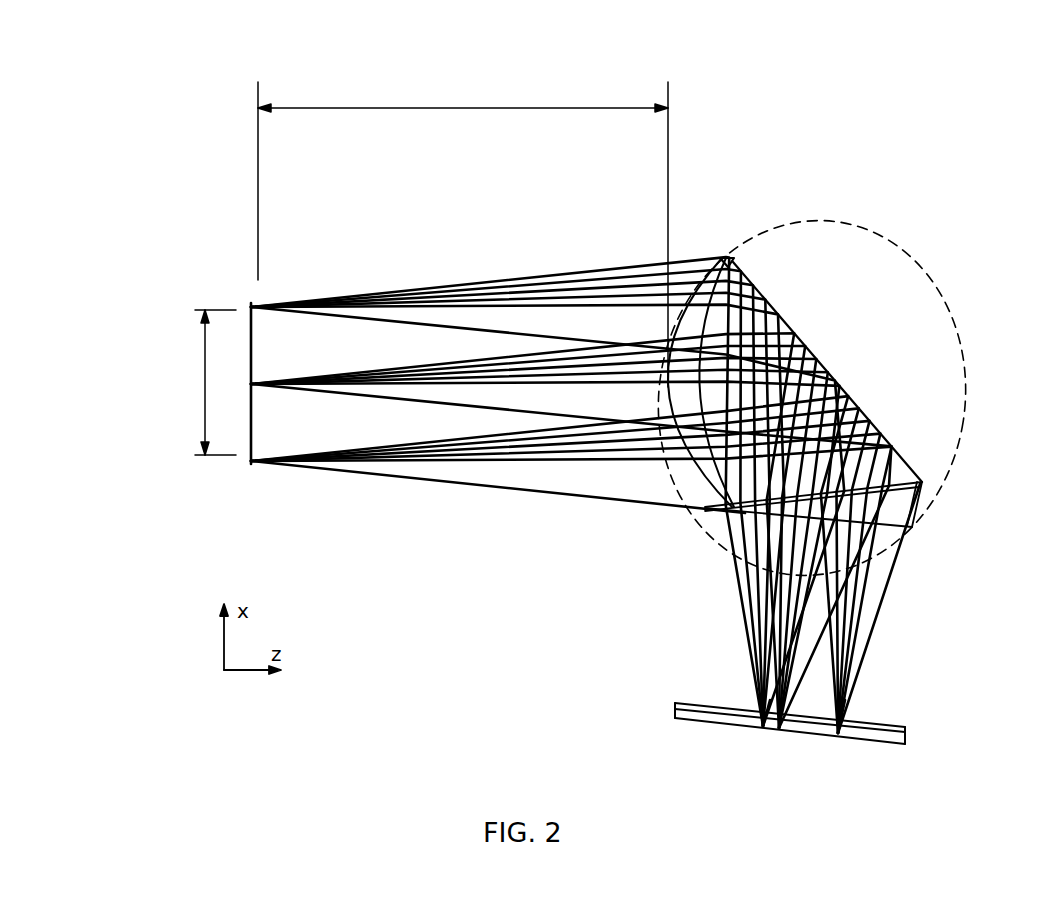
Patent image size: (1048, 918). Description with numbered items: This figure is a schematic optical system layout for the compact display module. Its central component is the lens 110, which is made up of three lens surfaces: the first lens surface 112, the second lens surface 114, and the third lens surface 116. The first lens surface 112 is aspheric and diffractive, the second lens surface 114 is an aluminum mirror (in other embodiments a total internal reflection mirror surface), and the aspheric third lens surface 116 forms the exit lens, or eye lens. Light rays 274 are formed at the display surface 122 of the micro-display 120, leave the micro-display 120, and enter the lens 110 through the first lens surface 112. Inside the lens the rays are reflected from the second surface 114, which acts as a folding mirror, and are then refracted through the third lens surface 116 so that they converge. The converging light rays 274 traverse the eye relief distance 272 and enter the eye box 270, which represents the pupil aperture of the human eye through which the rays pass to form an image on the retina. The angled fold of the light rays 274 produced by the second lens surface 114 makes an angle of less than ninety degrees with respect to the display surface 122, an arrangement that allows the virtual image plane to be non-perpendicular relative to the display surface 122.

The lens 110 is at (791, 222).
The first lens surface 112 is at (903, 533).
The second lens surface 114 is at (905, 463).
The third lens surface 116 is at (711, 495).
The micro-display 120 is at (905, 728).
The display surface 122 is at (675, 718).
The eye box 270 is at (205, 400).
The eye relief distance 272 is at (450, 108).
The light rays 274 is at (797, 658).